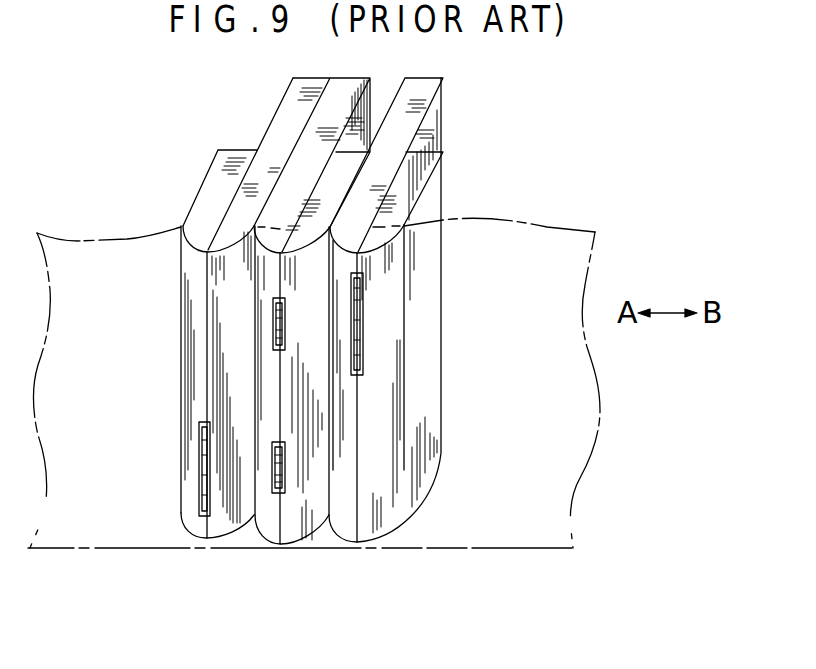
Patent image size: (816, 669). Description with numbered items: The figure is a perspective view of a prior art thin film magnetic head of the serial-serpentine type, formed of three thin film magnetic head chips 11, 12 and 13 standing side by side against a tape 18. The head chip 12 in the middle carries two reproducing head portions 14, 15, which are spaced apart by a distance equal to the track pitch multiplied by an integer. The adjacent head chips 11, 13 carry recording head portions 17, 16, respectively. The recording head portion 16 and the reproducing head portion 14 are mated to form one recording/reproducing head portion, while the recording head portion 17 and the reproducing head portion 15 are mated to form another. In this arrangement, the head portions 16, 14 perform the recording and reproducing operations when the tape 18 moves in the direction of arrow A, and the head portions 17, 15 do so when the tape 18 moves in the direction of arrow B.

The head chip 11 is at (200, 551).
The head chip 12 is at (277, 551).
The head chip 13 is at (362, 551).
The reproducing head portion 14 is at (285, 320).
The reproducing head portion 15 is at (286, 479).
The recording head portion 16 is at (364, 298).
The recording head portion 17 is at (199, 480).
The tape 18 is at (540, 248).